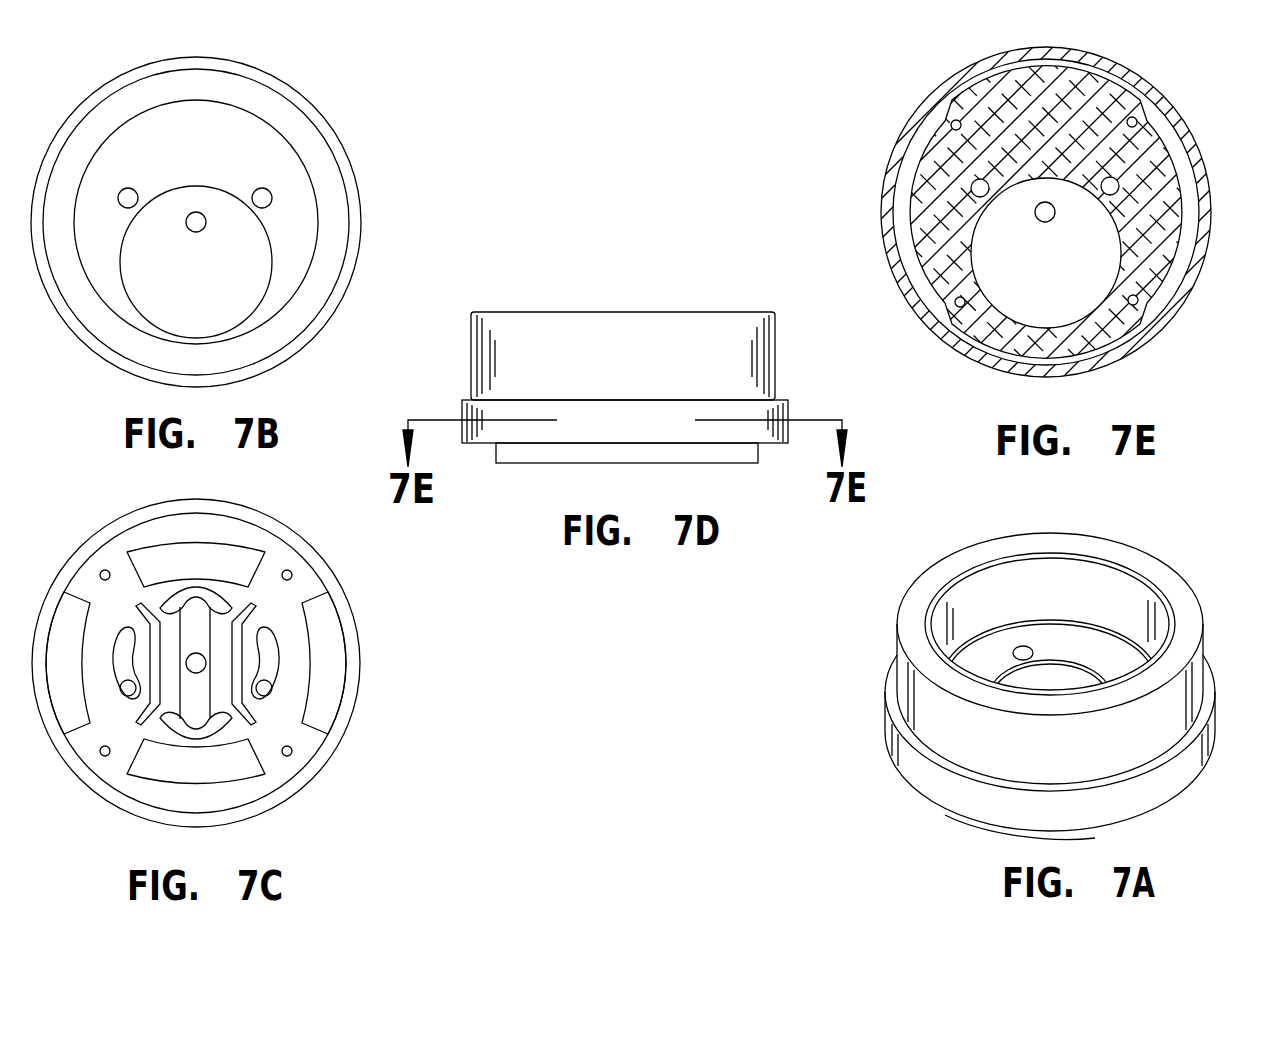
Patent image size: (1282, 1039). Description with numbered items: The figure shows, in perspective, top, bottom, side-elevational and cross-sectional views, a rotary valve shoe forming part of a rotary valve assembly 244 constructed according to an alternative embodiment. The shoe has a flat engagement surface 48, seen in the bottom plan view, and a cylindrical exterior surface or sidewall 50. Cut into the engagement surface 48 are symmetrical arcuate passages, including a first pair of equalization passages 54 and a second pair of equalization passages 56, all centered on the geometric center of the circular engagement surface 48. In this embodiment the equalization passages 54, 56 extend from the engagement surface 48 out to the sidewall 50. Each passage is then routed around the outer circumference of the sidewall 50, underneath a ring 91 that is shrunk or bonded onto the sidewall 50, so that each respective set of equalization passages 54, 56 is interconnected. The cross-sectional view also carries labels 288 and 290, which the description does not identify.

In FIG. 7B, the ring 91 is at (308, 90).
In FIG. 7E, the ring 91 is at (1047, 47).
In FIG. 7A, the ring 91 is at (1168, 552).
In FIG. 7C, the engagement surface 48 is at (217, 663).
In FIG. 7C, the first pair of equalization passages 54 is at (290, 574).
In FIG. 7E, the first pair of equalization passages 54 is at (1135, 117).
In FIG. 7C, the second pair of equalization passages 56 is at (100, 576).
In FIG. 7E, the second pair of equalization passages 56 is at (956, 120).
In FIG. 7E, the cylindrical exterior surface 50 is at (936, 110).
In FIG. 7E, the outer ring 288 is at (1199, 218).
In FIG. 7E, the annular gap 290 is at (906, 211).
In FIG. 7A, the rotary valve assembly 244 is at (989, 686).